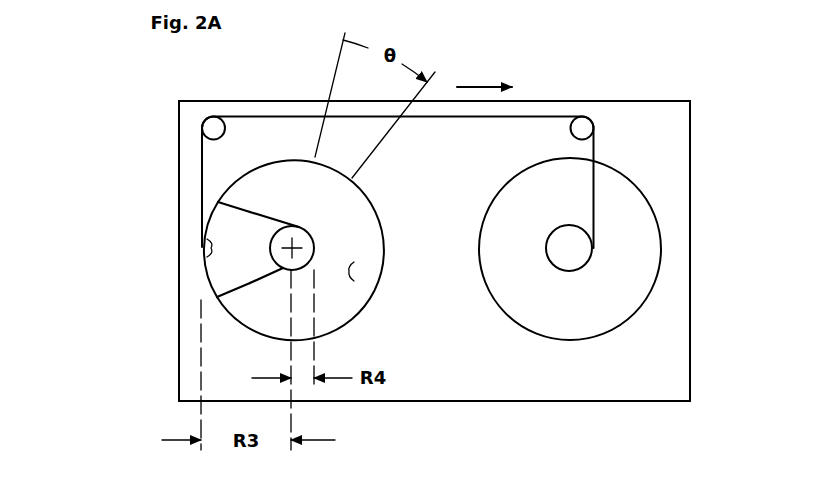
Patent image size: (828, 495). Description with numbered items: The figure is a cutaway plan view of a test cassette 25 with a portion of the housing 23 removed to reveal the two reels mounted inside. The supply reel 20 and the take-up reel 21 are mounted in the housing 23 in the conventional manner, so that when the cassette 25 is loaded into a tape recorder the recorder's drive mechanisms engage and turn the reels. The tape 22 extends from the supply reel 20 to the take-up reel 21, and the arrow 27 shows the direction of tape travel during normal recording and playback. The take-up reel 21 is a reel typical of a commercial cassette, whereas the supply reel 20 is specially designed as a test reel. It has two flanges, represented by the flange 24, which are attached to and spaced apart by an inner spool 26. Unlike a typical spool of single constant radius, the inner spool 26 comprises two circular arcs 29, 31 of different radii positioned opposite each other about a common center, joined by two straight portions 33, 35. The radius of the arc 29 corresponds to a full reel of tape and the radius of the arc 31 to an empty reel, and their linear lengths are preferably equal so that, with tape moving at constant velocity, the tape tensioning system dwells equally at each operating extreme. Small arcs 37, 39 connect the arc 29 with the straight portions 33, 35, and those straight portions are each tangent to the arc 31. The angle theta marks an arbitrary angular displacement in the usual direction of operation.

The supply reel 20 is at (383, 255).
The take-up reel 21 is at (568, 340).
The tape 22 is at (242, 116).
The housing 23 is at (533, 100).
The flange 24 is at (355, 268).
The test cassette 25 is at (623, 92).
The inner spool 26 is at (205, 247).
The arrow 27 is at (465, 85).
The circular arc 29 is at (210, 218).
The circular arc 31 is at (315, 248).
The straight portion 33 is at (247, 207).
The straight portion 35 is at (272, 272).
The small arc 37 is at (218, 202).
The small arc 39 is at (217, 297).